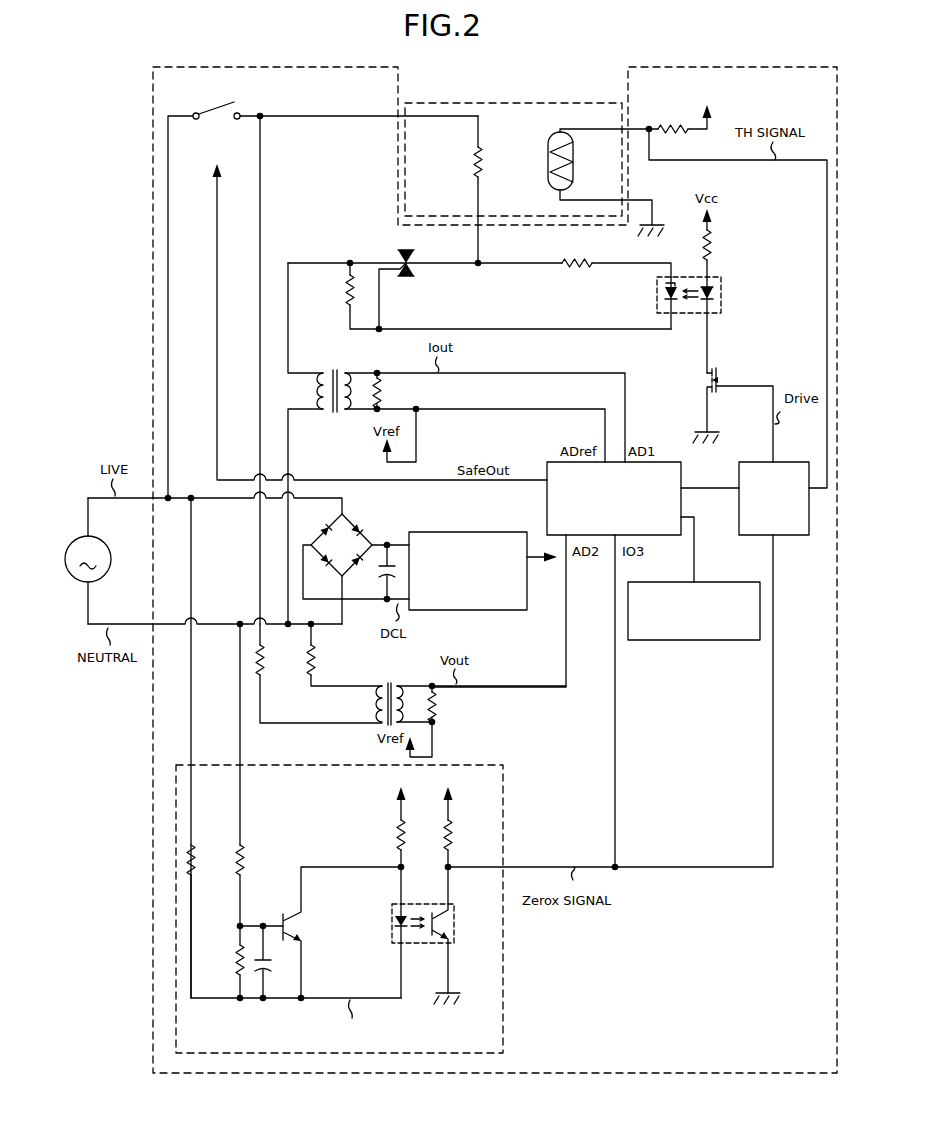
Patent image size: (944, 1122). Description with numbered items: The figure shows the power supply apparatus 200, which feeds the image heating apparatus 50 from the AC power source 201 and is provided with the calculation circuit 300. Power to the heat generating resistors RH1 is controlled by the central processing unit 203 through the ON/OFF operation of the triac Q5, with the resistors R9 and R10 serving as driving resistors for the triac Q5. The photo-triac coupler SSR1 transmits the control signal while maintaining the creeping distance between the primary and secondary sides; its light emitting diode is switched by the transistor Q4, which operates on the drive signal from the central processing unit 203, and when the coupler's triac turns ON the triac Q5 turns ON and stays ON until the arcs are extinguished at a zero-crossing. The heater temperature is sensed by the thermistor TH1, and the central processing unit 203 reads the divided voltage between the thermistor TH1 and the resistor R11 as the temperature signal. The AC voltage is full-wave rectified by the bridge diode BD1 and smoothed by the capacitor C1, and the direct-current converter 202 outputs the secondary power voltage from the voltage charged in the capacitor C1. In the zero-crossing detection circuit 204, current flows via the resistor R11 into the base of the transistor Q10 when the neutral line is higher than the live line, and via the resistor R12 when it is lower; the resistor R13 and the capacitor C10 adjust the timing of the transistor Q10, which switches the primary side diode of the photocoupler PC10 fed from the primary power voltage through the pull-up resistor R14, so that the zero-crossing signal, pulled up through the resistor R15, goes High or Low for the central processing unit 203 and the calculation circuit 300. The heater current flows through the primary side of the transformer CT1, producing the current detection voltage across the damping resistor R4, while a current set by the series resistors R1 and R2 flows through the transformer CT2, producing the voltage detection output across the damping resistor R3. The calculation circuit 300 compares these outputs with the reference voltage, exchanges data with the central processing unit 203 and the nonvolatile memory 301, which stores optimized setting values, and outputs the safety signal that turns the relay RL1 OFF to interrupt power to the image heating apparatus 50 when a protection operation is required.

The power supply apparatus 200 is at (153, 170).
The image heating apparatus 50 is at (540, 103).
The AC power source 201 is at (127, 526).
The DC/DC converter 202 is at (505, 614).
The CPU 203 is at (801, 538).
The zero-crossing detection circuit 204 is at (505, 1012).
The calculation circuit 300 is at (547, 508).
The nonvolatile memory 301 is at (692, 643).
The relay RL1 is at (237, 121).
The heat generating resistors RH1 is at (469, 163).
The thermistor TH1 is at (575, 168).
The resistor R11 is at (672, 125).
The photo-triac coupler SSR1 is at (722, 293).
The transistor Q4 is at (720, 371).
The triac Q5 is at (408, 277).
The resistor R9 is at (345, 291).
The resistor R10 is at (578, 272).
The transformer CT1 is at (326, 371).
The damping resistor R4 is at (383, 392).
The bridge diode BD1 is at (355, 524).
The capacitor C1 is at (392, 547).
The resistor R1 is at (265, 664).
The resistor R2 is at (316, 664).
The transformer CT2 is at (384, 684).
The damping resistor R3 is at (437, 708).
The resistor R12 is at (198, 855).
The resistor R13 is at (238, 958).
The transistor Q10 is at (303, 929).
The capacitor C10 is at (272, 967).
The pull-up resistor R14 is at (396, 836).
The resistor R15 is at (455, 838).
The photocoupler PC10 is at (455, 921).